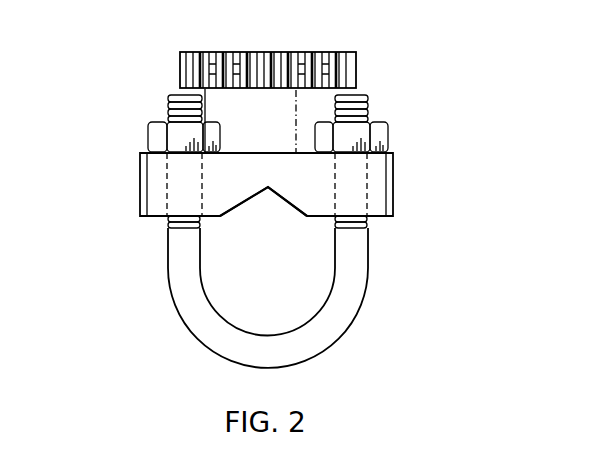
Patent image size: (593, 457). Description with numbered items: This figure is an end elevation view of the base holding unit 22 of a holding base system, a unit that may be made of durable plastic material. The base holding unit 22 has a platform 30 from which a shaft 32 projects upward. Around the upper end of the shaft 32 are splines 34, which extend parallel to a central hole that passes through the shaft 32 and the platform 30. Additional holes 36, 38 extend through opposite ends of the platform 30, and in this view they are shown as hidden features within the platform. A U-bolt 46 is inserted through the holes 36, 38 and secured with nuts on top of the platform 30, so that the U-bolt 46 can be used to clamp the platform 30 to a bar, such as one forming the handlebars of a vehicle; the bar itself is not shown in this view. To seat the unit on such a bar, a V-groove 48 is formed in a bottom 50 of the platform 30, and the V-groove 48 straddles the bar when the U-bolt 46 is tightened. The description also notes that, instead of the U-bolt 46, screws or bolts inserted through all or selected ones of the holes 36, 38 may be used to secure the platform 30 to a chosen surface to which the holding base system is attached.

The base holding unit 22 is at (462, 70).
The platform 30 is at (140, 170).
The shaft 32 is at (325, 100).
The splines 34 is at (357, 57).
The hole 36 is at (168, 192).
The hole 38 is at (397, 200).
The U-bolt 46 is at (357, 287).
The V-groove 48 is at (255, 198).
The bottom 50 is at (213, 217).